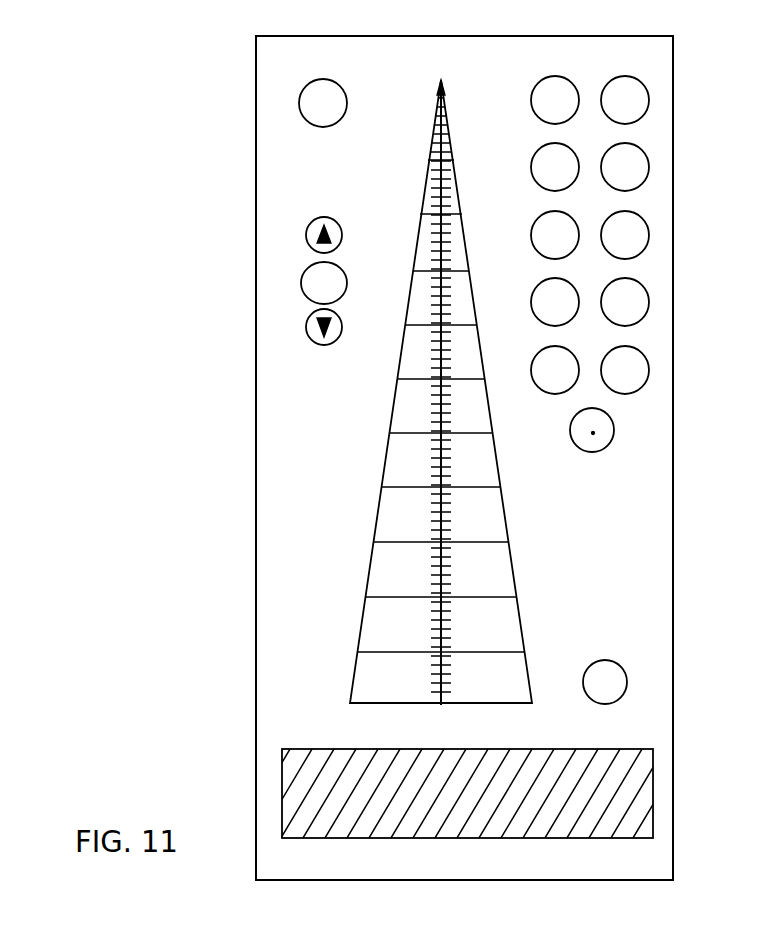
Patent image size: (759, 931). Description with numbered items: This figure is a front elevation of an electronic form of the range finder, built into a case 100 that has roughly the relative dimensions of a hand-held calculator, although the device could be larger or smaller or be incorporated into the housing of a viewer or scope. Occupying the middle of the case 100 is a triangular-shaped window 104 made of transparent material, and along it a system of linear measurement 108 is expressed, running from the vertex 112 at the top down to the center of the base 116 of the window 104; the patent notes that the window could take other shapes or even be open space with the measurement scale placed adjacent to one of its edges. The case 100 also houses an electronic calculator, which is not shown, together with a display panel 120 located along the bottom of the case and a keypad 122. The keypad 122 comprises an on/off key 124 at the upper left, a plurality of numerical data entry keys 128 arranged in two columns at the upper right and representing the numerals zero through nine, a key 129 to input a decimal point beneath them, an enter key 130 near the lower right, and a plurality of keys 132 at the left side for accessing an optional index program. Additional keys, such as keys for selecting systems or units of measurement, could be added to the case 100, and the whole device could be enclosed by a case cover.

The case 100 is at (425, 458).
The triangular-shaped window 104 is at (364, 391).
The system of linear measurement 108 is at (320, 392).
The vertex 112 is at (407, 50).
The base 116 is at (361, 717).
The display panel 120 is at (438, 793).
The keypad 122 is at (233, 178).
The on/off key 124 is at (266, 103).
The numerical data entry keys 128 is at (590, 197).
The decimal point key 129 is at (653, 430).
The enter key 130 is at (655, 682).
The index program keys 132 is at (266, 281).